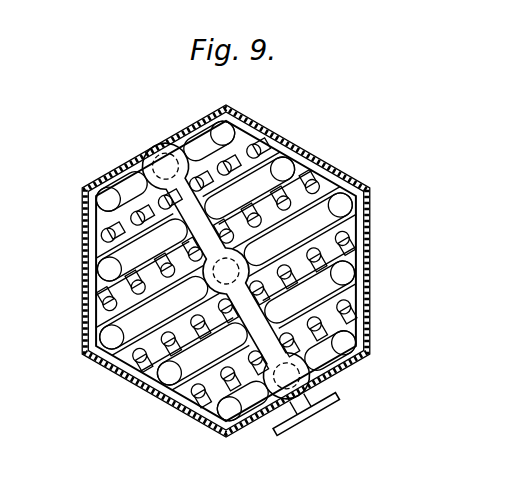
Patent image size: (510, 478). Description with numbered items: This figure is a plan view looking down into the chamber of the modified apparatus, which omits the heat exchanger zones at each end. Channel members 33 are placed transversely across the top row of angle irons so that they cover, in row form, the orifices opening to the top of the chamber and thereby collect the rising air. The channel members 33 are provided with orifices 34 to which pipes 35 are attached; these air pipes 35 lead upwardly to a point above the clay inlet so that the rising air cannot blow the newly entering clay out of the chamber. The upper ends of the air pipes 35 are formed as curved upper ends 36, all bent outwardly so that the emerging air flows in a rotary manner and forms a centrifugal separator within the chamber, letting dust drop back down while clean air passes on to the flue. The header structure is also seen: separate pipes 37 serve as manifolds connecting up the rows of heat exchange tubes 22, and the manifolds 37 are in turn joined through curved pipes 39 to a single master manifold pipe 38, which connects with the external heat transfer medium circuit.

The heat exchange tube 22 is at (370, 340).
The channel member 33 is at (352, 287).
The orifice 34 is at (352, 301).
The pipe 35 is at (323, 155).
The curved upper end 36 is at (335, 170).
The pipe 37 is at (345, 211).
The master manifold pipe 38 is at (320, 396).
The curved pipe 39 is at (355, 187).